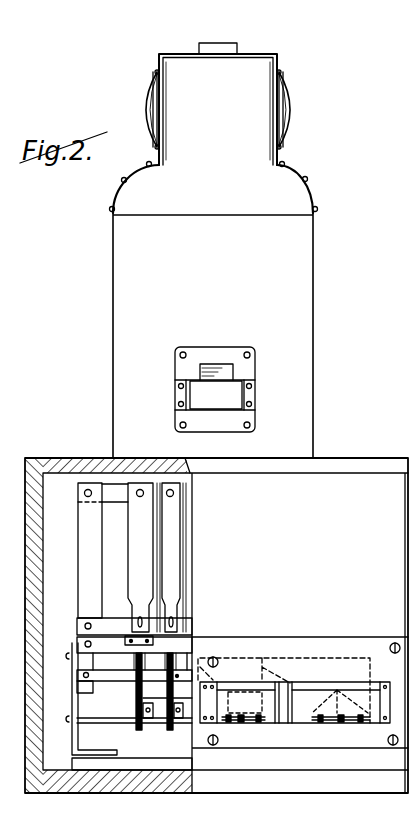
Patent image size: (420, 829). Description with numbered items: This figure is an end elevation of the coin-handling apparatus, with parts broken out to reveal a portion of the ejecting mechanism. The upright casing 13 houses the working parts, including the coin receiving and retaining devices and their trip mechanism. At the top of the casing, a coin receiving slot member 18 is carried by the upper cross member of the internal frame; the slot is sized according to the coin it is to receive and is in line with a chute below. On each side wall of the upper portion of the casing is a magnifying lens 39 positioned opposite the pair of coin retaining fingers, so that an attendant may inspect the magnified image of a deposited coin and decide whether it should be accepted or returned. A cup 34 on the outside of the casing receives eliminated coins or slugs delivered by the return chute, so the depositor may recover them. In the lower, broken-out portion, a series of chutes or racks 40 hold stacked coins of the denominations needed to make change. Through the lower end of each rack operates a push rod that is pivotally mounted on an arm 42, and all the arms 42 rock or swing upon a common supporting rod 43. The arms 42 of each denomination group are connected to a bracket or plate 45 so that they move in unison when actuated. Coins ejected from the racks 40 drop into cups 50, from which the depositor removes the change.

The casing 13 is at (304, 318).
The coin receiving slot member 18 is at (200, 46).
The cup 34 is at (200, 393).
The magnifying lens 39 is at (147, 110).
The chute or rack 40 is at (143, 577).
The arm 42 is at (134, 702).
The supporting rod 43 is at (107, 722).
The bracket or plate 45 is at (148, 720).
The cup 50 is at (252, 712).